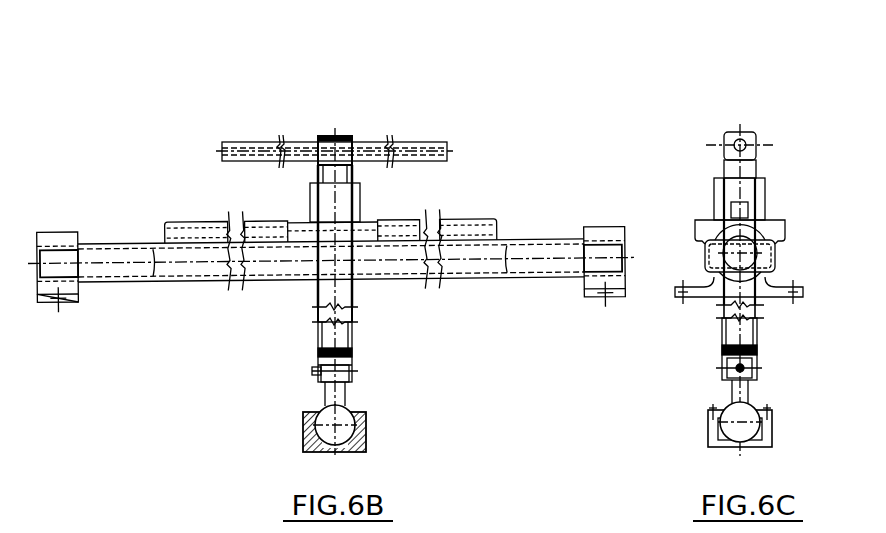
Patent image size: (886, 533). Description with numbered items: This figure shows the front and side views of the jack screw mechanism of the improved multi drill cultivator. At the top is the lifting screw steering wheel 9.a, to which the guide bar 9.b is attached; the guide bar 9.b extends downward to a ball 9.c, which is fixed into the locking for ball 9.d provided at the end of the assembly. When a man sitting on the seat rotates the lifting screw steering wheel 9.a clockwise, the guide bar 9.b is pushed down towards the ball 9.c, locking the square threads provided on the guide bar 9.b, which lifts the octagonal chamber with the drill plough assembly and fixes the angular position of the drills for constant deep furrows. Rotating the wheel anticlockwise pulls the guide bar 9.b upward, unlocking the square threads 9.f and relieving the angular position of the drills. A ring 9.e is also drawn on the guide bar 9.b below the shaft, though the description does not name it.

In FIG. 6B, the lifting screw steering wheel 9.a is at (418, 137).
In FIG. 6C, the lifting screw steering wheel 9.a is at (735, 135).
In FIG. 6B, the guide bar 9.b is at (336, 135).
In FIG. 6C, the guide bar 9.b is at (743, 128).
In FIG. 6B, the ball 9.c is at (317, 404).
In FIG. 6C, the ball 9.c is at (758, 400).
In FIG. 6B, the locking for ball 9.d is at (370, 432).
In FIG. 6C, the locking for ball 9.d is at (704, 428).
In FIG. 6B, the clamp ring 9.e is at (358, 352).
In FIG. 6C, the clamp ring 9.e is at (716, 346).
In FIG. 6B, the square threads 9.f is at (60, 232).